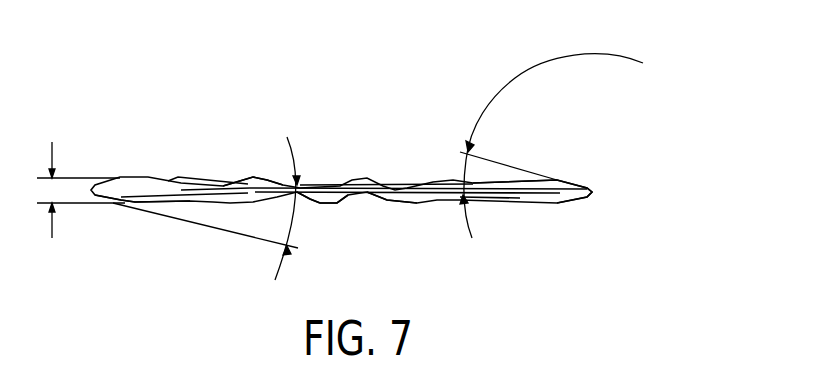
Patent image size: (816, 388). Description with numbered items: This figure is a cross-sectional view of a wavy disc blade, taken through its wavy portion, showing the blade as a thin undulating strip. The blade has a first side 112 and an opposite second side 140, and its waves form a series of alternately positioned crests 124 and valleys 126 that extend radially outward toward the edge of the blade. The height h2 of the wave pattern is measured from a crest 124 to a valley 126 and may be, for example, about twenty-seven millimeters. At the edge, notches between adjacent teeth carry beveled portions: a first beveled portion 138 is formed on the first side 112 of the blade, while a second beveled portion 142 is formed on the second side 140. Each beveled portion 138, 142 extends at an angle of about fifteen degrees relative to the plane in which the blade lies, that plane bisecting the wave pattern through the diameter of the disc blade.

The height h2 is at (53, 152).
The first side 112 is at (313, 203).
The crest 124 is at (260, 178).
The valley 126 is at (313, 204).
The first beveled portion 138 is at (567, 182).
The second side 140 is at (366, 196).
The second beveled portion 142 is at (123, 206).